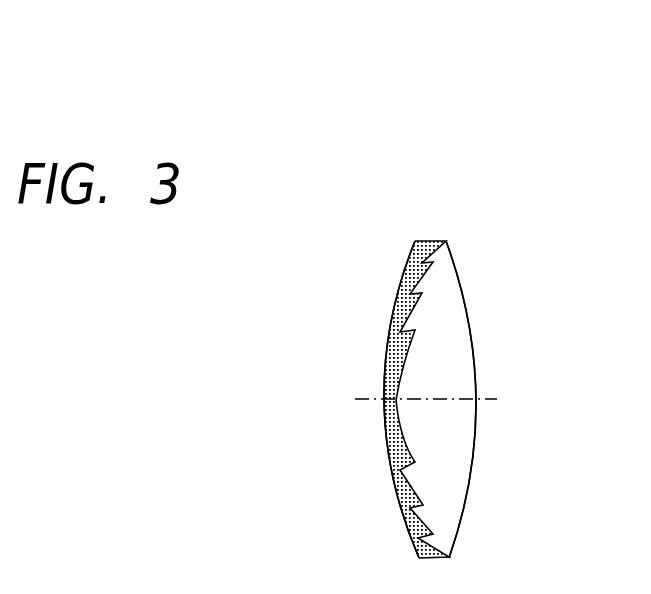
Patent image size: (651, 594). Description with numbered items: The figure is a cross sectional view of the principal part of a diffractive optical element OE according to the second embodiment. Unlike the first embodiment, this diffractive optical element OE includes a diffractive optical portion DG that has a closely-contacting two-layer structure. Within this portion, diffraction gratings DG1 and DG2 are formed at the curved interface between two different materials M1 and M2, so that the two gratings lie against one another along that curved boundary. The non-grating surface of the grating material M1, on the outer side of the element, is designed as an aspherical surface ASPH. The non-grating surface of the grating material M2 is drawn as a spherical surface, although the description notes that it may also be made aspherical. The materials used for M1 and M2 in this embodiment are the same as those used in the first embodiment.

The diffractive optical element OE is at (505, 93).
The diffractive optical portion DG is at (525, 148).
The diffraction grating DG1 is at (423, 242).
The diffraction grating DG2 is at (452, 273).
The aspherical surface ASPH is at (386, 286).
The grating material M1 is at (389, 456).
The grating material M2 is at (460, 452).